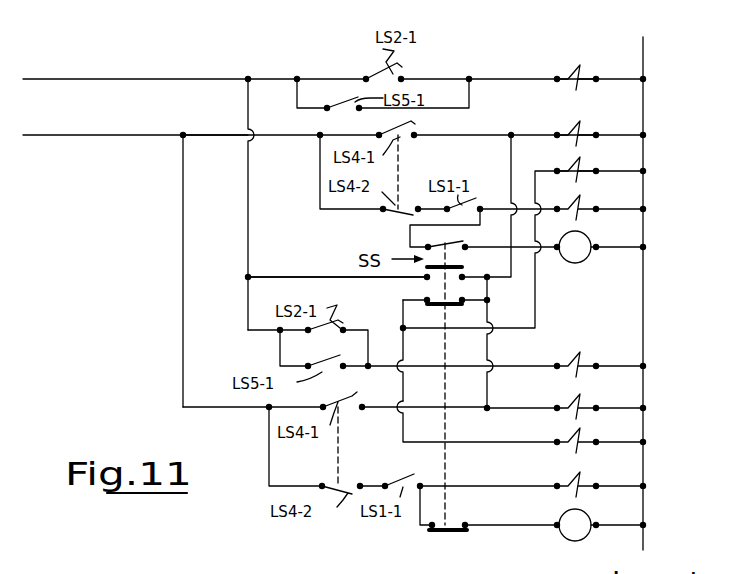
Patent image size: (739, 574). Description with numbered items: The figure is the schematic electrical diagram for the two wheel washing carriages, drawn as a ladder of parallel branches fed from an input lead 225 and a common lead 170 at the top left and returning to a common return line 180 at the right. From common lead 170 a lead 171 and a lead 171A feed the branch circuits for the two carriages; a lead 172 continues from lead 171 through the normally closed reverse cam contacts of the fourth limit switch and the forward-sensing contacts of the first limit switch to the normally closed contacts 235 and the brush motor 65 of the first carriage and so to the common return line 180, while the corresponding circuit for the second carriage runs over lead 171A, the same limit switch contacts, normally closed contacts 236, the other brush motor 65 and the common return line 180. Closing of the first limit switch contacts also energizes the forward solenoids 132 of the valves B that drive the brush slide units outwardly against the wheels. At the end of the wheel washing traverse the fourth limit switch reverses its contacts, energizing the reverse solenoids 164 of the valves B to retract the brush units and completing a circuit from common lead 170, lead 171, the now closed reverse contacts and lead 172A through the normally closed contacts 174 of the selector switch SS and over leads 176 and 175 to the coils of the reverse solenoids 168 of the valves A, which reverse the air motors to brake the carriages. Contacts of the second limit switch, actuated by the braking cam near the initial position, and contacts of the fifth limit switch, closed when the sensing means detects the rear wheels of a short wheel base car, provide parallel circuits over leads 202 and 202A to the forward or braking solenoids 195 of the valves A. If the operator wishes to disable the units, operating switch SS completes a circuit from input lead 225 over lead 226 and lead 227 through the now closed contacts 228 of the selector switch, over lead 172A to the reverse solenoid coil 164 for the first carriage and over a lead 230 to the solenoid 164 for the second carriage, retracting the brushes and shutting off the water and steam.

The input lead 225 is at (93, 78).
The common lead 170 is at (100, 137).
The lead 171 is at (220, 135).
The lead 171A is at (183, 267).
The lead 226 is at (248, 190).
The lead 172 is at (320, 167).
The lead 172A is at (510, 160).
The lead 202 is at (472, 116).
The lead 227 is at (278, 277).
The normally closed contacts 235 is at (428, 245).
The contacts of selector switch 228 is at (463, 268).
The contacts of switch 174 is at (427, 307).
The lead 176 is at (406, 330).
The lead 175 is at (403, 425).
The lead 230 is at (490, 349).
The lead 202A is at (280, 350).
The normally closed contacts 236 is at (433, 531).
The forward solenoids 195 is at (577, 66).
The reverse solenoids 164 is at (581, 121).
The reverse solenoids 168 is at (581, 157).
The forward solenoids 132 is at (581, 195).
The brush motors 65 is at (584, 262).
The common return line 180 is at (643, 50).